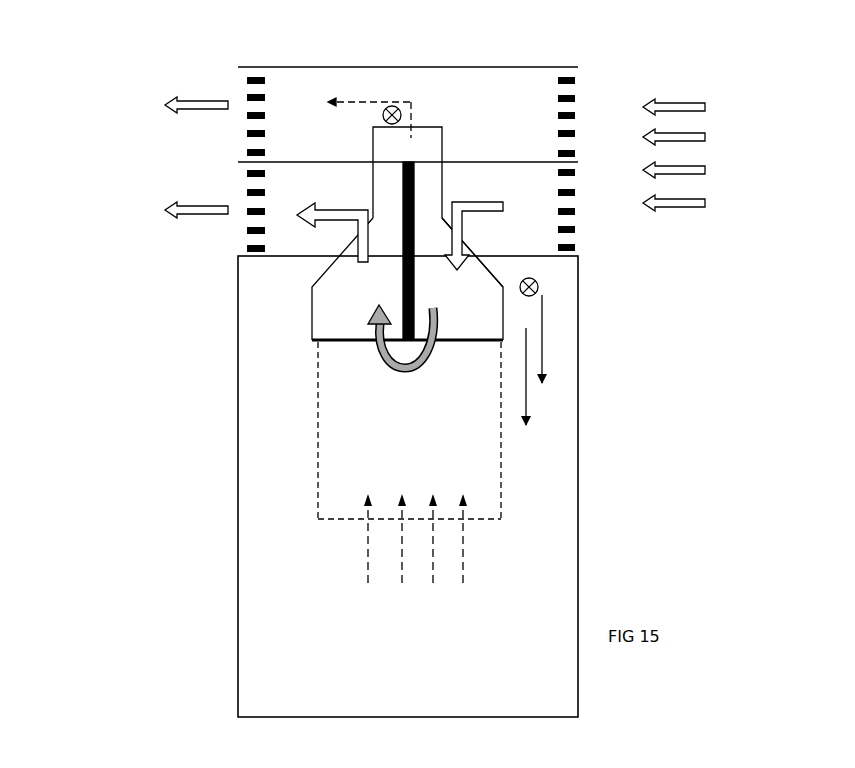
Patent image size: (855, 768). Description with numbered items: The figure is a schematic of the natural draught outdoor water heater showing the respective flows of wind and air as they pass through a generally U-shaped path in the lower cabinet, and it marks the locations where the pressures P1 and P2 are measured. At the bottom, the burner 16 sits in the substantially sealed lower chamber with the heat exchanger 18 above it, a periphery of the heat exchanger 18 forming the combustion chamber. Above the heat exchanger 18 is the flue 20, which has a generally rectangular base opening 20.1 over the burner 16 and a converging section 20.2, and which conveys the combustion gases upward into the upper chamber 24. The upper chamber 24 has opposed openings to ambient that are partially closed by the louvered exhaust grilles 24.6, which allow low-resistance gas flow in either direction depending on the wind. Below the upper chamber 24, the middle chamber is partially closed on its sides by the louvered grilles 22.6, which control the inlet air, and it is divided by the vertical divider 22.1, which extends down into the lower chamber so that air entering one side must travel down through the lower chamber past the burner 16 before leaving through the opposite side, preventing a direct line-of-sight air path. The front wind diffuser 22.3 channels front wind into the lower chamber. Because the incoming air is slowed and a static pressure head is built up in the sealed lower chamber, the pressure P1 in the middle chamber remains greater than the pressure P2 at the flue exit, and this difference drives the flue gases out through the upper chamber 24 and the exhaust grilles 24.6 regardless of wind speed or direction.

The burner 16 is at (492, 512).
The heat exchanger 18 is at (337, 413).
The flue 20 is at (323, 313).
The base opening 20.1 is at (503, 343).
The converging section 20.2 is at (487, 268).
The divider formation 22.1 is at (413, 193).
The front wind diffuser 22.3 is at (435, 135).
The grilles 22.6 is at (248, 220).
The upper chamber 24 is at (513, 80).
The exhaust grilles 24.6 is at (248, 105).
The pressure P1 is at (540, 290).
The pressure P2 is at (385, 108).